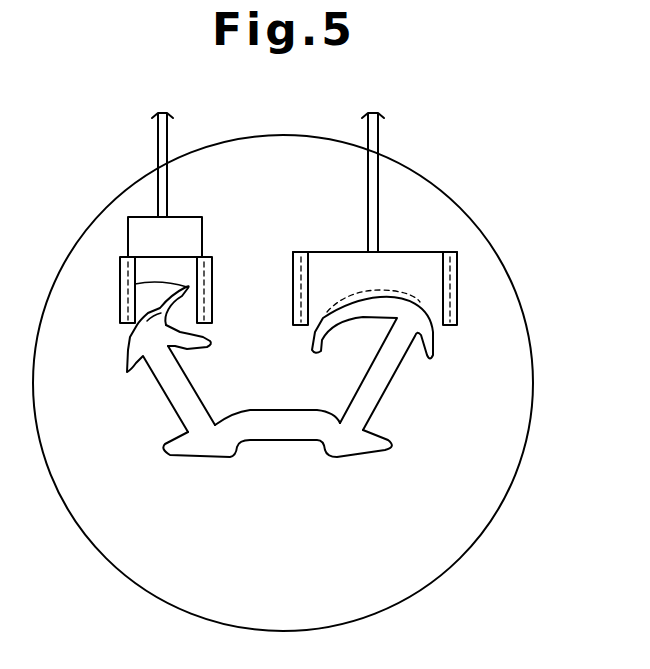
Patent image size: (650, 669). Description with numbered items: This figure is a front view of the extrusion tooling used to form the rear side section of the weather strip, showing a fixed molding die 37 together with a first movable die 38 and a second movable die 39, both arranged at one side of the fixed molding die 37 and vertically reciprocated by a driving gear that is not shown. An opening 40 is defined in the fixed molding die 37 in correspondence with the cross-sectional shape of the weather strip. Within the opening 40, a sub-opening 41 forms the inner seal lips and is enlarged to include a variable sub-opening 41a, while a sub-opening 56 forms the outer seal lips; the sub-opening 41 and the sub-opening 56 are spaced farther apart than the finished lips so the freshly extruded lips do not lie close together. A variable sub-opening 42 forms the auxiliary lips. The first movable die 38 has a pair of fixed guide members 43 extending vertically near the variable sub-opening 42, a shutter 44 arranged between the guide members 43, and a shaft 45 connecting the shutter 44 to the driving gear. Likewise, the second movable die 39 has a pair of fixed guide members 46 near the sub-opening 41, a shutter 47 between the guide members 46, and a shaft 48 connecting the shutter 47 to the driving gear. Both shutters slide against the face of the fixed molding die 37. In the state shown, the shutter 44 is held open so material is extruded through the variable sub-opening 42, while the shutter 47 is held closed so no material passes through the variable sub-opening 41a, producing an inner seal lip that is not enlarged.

The fixed molding die 37 is at (530, 412).
The first movable die 38 is at (149, 216).
The second movable die 39 is at (351, 219).
The opening 40 is at (278, 433).
The sub-opening 41 is at (362, 318).
The variable sub-opening 41a is at (406, 300).
The variable sub-opening 42 is at (126, 336).
The fixed guide members 43 is at (121, 284).
The shutter 44 is at (136, 232).
The shaft 45 is at (168, 128).
The fixed guide members 46 is at (293, 258).
The shutter 47 is at (334, 257).
The shaft 48 is at (368, 171).
The sub-opening 56 is at (188, 341).